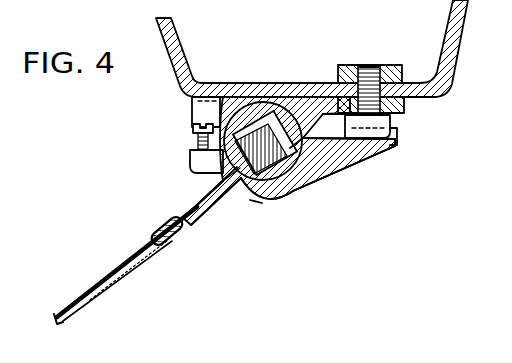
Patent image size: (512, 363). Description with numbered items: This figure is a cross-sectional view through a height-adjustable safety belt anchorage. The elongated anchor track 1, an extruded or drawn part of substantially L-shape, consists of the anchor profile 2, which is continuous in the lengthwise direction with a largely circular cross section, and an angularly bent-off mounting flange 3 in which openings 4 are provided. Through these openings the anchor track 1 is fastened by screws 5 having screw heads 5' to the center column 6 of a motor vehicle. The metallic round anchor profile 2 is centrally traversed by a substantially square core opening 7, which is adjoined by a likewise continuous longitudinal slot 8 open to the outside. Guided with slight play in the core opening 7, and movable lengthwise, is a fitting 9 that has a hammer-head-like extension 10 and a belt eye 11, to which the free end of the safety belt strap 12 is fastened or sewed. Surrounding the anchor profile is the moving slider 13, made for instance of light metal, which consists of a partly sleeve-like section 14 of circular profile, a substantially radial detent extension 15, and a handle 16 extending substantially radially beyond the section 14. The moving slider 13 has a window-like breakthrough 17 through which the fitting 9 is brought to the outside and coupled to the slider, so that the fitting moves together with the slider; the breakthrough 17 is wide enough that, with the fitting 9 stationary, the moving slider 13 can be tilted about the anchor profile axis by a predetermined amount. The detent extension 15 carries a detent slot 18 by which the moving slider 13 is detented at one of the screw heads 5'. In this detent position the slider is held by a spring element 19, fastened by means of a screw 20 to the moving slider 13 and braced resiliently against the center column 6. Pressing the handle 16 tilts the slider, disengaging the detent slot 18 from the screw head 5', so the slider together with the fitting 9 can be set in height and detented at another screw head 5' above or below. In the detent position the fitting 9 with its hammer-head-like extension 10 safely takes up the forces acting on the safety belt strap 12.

The anchor track 1 is at (326, 183).
The anchor profile 2 is at (250, 118).
The mounting flange 3 is at (417, 97).
The openings 4 is at (334, 96).
The screws 5 is at (371, 66).
The screw head 5' is at (352, 147).
The center column 6 is at (452, 58).
The core opening 7 is at (297, 192).
The longitudinal slot 8 is at (205, 177).
The fitting 9 is at (210, 200).
The hammer-head-like extension 10 is at (284, 130).
The belt eye 11 is at (185, 228).
The safety belt strap 12 is at (93, 290).
The moving slider 13 is at (343, 148).
The sleeve-like section 14 is at (272, 200).
The detent extension 15 is at (393, 146).
The handle 16 is at (190, 147).
The window-like breakthrough 17 is at (250, 200).
The detent slot 18 is at (398, 134).
The spring element 19 is at (190, 112).
The screw 20 is at (193, 170).